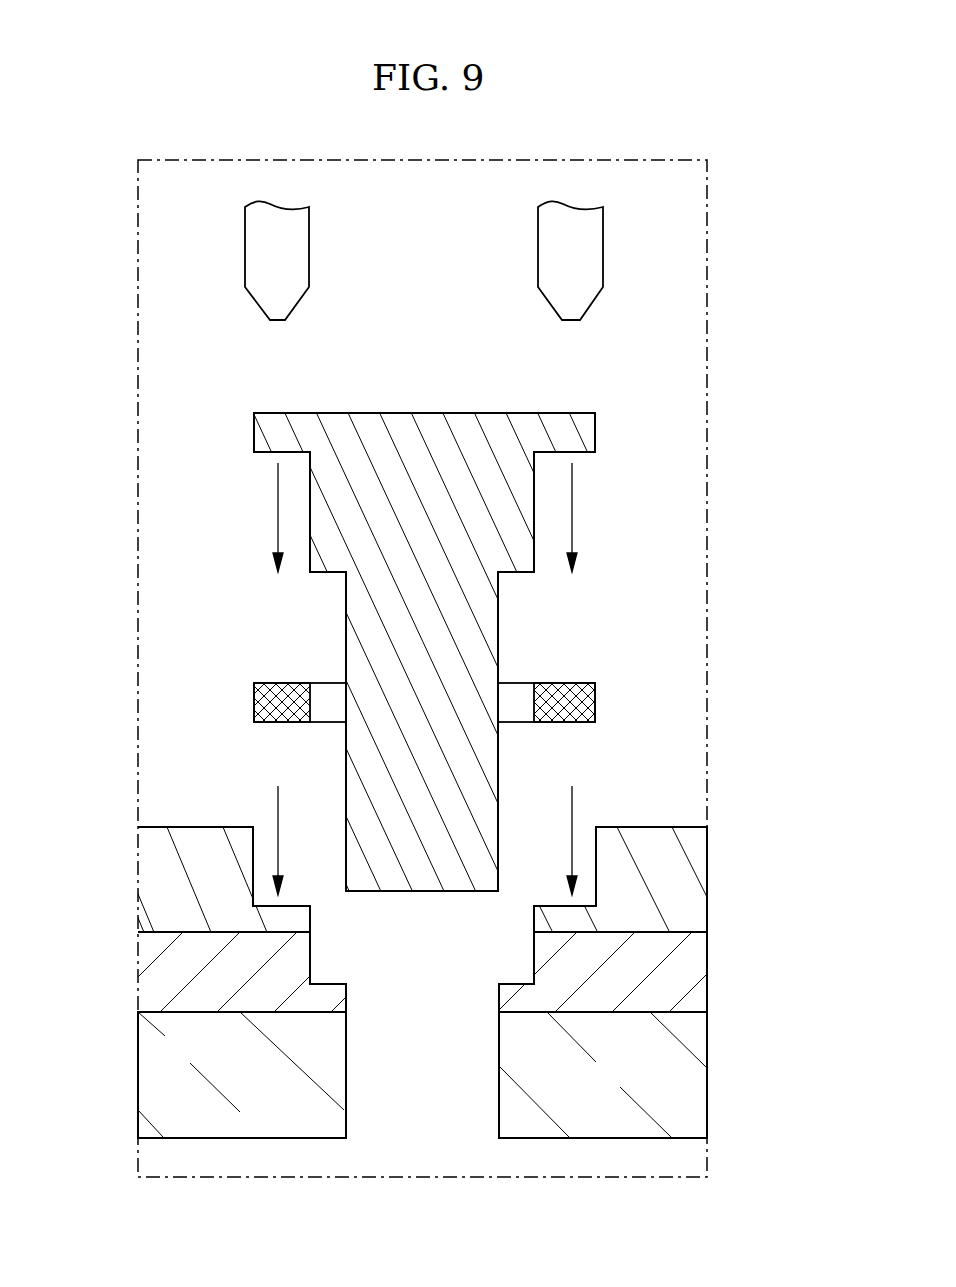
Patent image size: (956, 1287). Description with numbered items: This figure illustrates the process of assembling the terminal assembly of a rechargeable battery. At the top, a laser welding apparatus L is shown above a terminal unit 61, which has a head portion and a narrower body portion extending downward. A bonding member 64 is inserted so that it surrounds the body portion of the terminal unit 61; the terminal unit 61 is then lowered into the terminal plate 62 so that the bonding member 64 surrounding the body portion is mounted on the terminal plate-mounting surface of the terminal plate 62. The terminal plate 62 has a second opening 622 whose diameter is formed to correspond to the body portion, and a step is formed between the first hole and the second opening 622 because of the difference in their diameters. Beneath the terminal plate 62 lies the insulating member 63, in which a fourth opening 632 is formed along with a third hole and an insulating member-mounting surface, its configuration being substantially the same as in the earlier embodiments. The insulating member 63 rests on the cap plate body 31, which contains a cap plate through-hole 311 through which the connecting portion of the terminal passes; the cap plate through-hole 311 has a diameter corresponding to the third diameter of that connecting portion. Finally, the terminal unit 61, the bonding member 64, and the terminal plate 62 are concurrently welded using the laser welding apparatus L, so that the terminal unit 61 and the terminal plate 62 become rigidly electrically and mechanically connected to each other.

The laser welding apparatus L is at (580, 247).
The terminal unit 61 is at (612, 427).
The bonding member 64 is at (606, 694).
The terminal plate 62 is at (165, 898).
The second opening 622 is at (596, 853).
The insulating member 63 is at (165, 982).
The fourth opening 632 is at (534, 955).
The cap plate body 31 is at (165, 1088).
The cap plate through-hole 311 is at (500, 1050).